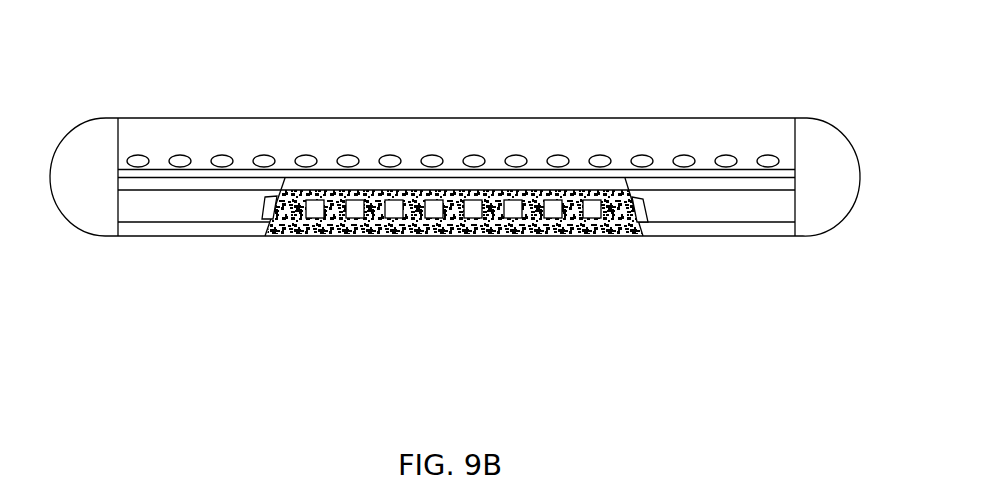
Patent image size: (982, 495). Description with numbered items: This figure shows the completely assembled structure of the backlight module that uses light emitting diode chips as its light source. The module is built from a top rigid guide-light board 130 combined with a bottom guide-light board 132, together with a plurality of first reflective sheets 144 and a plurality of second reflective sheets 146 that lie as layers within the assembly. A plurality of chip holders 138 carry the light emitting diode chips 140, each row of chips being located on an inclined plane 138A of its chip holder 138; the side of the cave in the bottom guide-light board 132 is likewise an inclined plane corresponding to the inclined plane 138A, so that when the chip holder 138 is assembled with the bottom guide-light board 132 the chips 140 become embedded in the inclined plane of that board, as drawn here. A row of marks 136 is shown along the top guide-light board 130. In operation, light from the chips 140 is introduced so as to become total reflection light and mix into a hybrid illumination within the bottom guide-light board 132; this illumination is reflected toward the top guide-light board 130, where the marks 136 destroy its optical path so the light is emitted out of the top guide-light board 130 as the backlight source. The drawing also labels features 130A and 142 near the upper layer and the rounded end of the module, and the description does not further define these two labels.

The top rigid guide-light board 130 is at (673, 133).
The intermediate layer 130A is at (370, 175).
The bottom guide-light board 132 is at (672, 202).
The marks 136 is at (552, 165).
The chip holder 138 is at (515, 227).
The inclined plane 138A is at (598, 227).
The light emitting diode chips 140 is at (442, 223).
The rounded end cap 142 is at (65, 133).
The first reflective sheets 144 is at (707, 187).
The second reflective sheets 146 is at (750, 230).